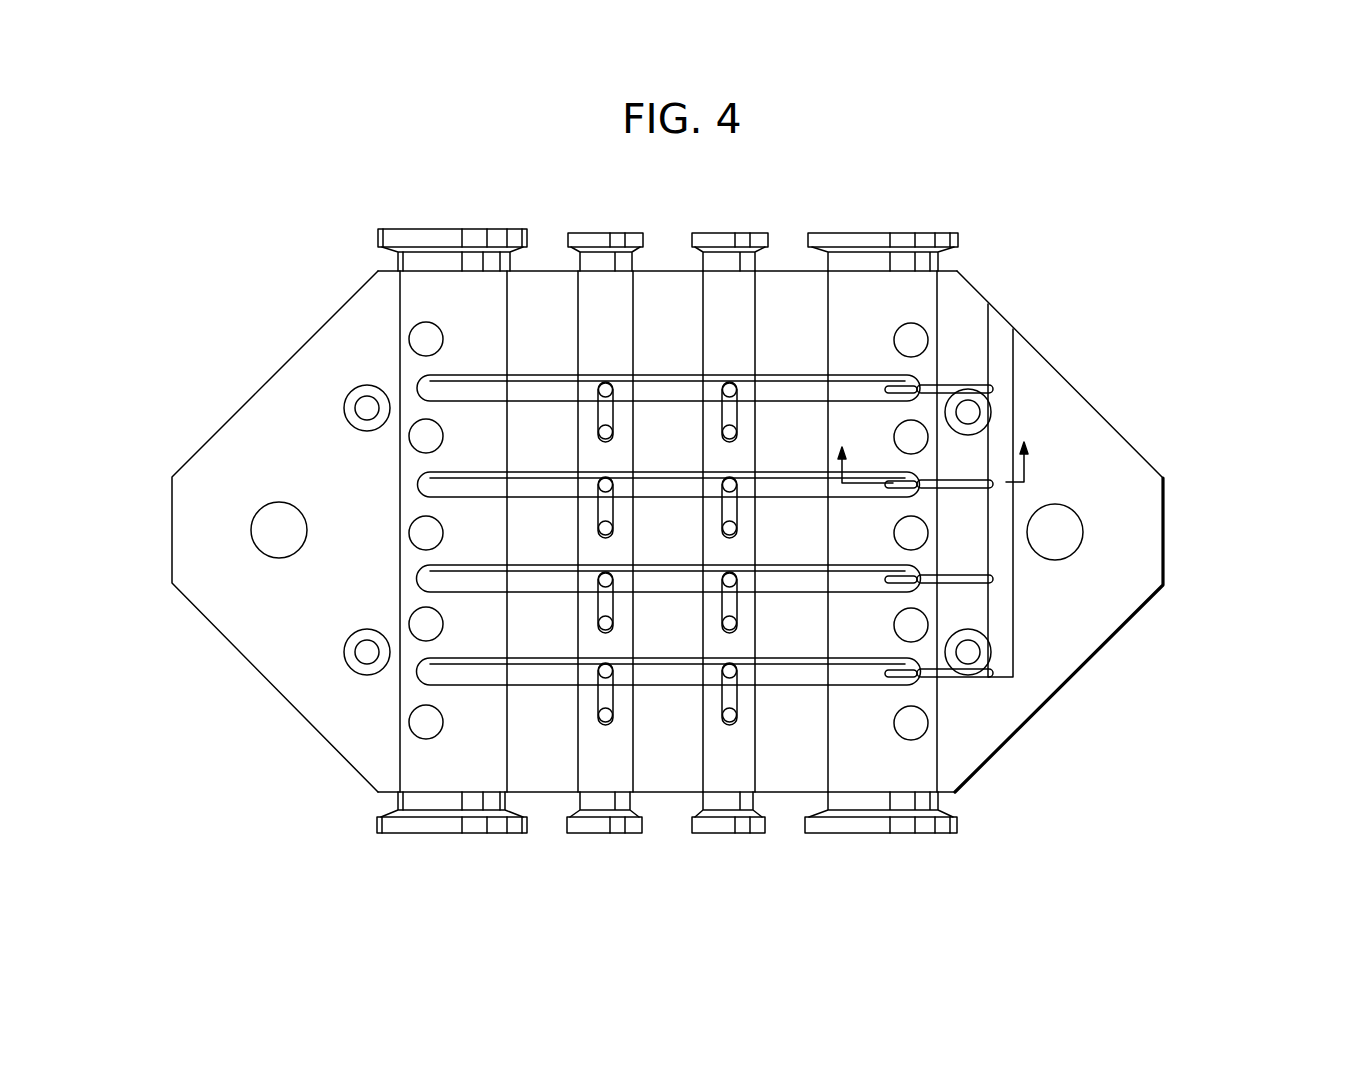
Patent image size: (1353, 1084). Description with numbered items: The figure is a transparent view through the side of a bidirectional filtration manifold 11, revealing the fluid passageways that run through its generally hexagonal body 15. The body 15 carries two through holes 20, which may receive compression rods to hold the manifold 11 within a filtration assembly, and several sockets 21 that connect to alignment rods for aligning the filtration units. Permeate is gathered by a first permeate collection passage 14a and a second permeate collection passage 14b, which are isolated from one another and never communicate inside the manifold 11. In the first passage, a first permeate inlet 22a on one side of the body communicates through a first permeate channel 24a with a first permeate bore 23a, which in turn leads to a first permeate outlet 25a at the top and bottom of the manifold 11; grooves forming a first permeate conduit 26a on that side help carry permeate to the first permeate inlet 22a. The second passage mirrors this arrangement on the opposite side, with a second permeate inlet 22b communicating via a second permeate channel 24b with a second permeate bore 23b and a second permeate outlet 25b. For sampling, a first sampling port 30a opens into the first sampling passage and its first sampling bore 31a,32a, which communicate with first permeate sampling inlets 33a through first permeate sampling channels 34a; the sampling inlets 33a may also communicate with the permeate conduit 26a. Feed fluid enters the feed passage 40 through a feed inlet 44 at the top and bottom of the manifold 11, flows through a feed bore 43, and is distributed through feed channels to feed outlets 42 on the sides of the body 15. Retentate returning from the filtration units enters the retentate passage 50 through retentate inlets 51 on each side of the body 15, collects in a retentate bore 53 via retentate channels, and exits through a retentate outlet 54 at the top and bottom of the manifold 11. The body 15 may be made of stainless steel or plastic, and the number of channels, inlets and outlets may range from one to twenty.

The manifold 11 is at (207, 438).
The first permeate collection passage 14a is at (612, 335).
The second permeate collection passage 14b is at (720, 333).
The body 15 is at (268, 643).
The through holes 20 is at (272, 548).
The sockets 21 is at (362, 409).
The first permeate inlet 22a is at (605, 480).
The second permeate inlet 22b is at (735, 481).
The first permeate bore 23a is at (618, 760).
The second permeate bore 23b is at (728, 753).
The first permeate channel 24a is at (610, 413).
The second permeate channel 24b is at (725, 507).
The first permeate outlet 25a is at (605, 233).
The second permeate outlet 25b is at (738, 233).
The first permeate conduit 26a is at (563, 483).
The first sampling port 30a is at (1007, 322).
The first sampling passage and first sampling bore 31a,32a is at (1025, 480).
The first permeate sampling inlet 33a is at (861, 454).
The first permeate sampling channel 34a is at (945, 390).
The feed passage 40 is at (377, 792).
The feed outlet 42 is at (423, 337).
The feed bore 43 is at (443, 289).
The feed inlet 44 is at (452, 229).
The retentate passage 50 is at (903, 295).
The retentate inlet 51 is at (905, 338).
The retentate bore 53 is at (918, 770).
The retentate outlet 54 is at (875, 231).